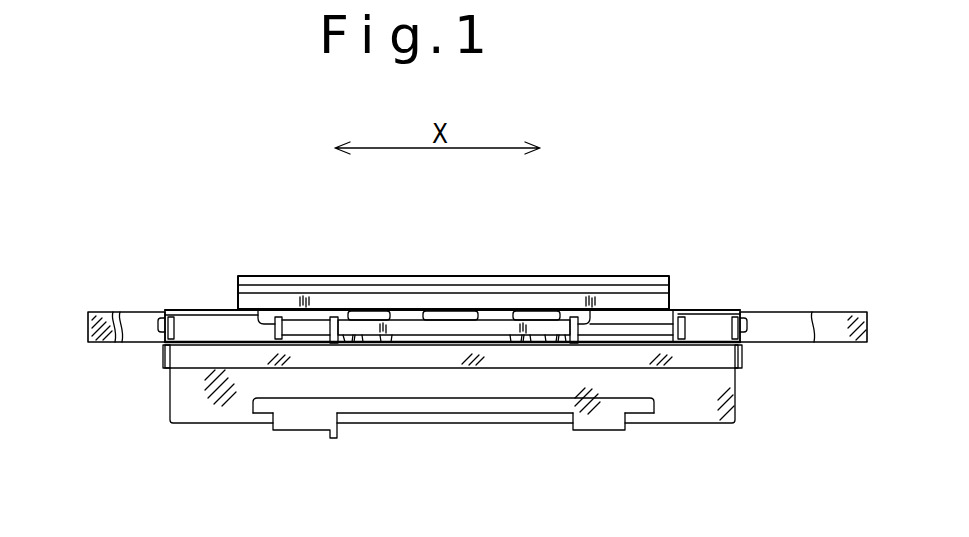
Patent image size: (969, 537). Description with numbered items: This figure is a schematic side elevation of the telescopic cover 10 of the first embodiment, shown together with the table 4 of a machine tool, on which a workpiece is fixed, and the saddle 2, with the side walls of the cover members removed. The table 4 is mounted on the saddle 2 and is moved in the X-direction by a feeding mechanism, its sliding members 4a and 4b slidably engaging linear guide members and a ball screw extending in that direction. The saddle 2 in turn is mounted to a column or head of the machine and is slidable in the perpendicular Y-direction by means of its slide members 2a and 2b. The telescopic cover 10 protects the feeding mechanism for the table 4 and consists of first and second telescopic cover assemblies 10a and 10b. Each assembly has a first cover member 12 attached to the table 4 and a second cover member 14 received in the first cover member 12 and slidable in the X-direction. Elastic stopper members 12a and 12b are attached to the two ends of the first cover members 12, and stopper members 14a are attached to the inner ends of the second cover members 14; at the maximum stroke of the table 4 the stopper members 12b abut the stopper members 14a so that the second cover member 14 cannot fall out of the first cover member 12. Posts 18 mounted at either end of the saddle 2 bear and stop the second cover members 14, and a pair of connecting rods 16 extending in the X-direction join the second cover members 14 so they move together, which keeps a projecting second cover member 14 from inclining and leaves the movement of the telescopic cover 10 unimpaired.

The saddle 2 is at (168, 405).
The slide member 2a is at (310, 431).
The slide member 2b is at (601, 431).
The table 4 is at (512, 277).
The sliding member 4a is at (372, 313).
The sliding member 4b is at (545, 314).
The telescopic cover 10 is at (214, 188).
The first telescopic cover assembly 10a is at (75, 303).
The second telescopic cover assembly 10b is at (783, 264).
The first cover member 12 is at (203, 308).
The stopper member 12a is at (318, 322).
The stopper member 12b is at (170, 314).
The second cover member 14 is at (100, 313).
The stopper member 14a is at (266, 316).
The connecting rod 16 is at (492, 321).
The post 18 is at (165, 350).